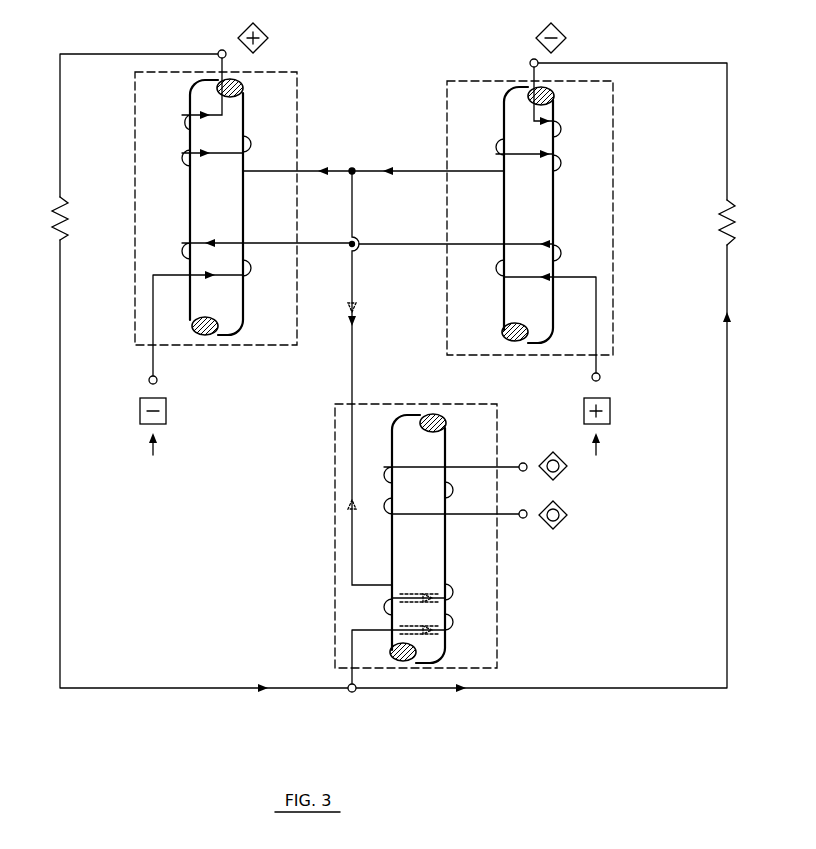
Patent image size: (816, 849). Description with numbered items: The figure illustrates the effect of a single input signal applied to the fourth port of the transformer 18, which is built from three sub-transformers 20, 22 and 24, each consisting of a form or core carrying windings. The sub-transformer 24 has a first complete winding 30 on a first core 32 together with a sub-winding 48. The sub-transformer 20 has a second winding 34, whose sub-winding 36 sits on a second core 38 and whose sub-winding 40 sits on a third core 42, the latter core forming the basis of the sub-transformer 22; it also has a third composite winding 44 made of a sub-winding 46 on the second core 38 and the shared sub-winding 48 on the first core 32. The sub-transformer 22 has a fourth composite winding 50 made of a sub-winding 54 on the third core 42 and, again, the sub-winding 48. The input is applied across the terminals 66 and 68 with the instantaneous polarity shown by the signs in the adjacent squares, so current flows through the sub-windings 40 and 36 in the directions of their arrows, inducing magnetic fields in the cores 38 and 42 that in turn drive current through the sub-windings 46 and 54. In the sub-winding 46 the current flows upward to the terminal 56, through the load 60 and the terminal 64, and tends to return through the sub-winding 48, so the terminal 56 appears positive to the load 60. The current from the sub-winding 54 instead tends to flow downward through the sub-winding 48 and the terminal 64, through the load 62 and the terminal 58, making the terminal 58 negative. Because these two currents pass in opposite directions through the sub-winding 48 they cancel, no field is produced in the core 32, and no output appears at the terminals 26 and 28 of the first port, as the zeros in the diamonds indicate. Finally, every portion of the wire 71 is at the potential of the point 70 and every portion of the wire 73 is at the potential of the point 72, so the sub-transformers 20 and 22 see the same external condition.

The transformer 18 is at (360, 102).
The sub-transformer 20 is at (297, 90).
The sub-transformer 22 is at (613, 207).
The sub-transformer 24 is at (417, 404).
The terminal 26 is at (523, 462).
The terminal 28 is at (523, 519).
The first complete winding 30 is at (383, 465).
The first core 32 is at (392, 527).
The second winding 34 is at (174, 272).
The sub-winding 36 is at (190, 244).
The second core 38 is at (190, 202).
The sub-winding 40 is at (560, 252).
The third core 42 is at (504, 208).
The third composite winding 44 is at (180, 118).
The sub-winding 46 is at (185, 154).
The sub-winding 48 is at (450, 594).
The fourth composite winding 50 is at (565, 126).
The sub-winding 54 is at (497, 150).
The terminal 56 is at (221, 50).
The terminal 58 is at (531, 60).
The load 60 is at (52, 228).
The load 62 is at (735, 226).
The terminal 64 is at (354, 692).
The terminal 66 is at (149, 380).
The terminal 68 is at (600, 377).
The point 70 is at (352, 168).
The wire 71 is at (418, 171).
The point 72 is at (348, 244).
The wire 73 is at (420, 244).